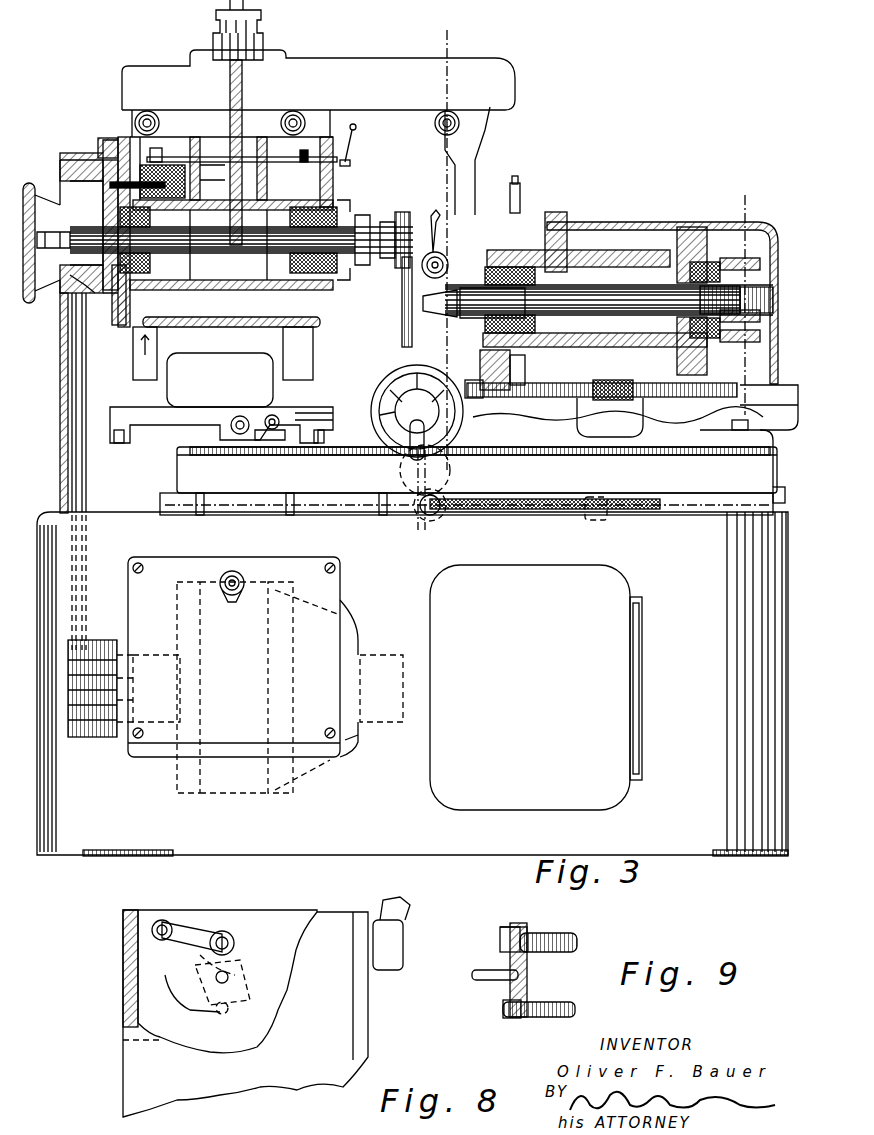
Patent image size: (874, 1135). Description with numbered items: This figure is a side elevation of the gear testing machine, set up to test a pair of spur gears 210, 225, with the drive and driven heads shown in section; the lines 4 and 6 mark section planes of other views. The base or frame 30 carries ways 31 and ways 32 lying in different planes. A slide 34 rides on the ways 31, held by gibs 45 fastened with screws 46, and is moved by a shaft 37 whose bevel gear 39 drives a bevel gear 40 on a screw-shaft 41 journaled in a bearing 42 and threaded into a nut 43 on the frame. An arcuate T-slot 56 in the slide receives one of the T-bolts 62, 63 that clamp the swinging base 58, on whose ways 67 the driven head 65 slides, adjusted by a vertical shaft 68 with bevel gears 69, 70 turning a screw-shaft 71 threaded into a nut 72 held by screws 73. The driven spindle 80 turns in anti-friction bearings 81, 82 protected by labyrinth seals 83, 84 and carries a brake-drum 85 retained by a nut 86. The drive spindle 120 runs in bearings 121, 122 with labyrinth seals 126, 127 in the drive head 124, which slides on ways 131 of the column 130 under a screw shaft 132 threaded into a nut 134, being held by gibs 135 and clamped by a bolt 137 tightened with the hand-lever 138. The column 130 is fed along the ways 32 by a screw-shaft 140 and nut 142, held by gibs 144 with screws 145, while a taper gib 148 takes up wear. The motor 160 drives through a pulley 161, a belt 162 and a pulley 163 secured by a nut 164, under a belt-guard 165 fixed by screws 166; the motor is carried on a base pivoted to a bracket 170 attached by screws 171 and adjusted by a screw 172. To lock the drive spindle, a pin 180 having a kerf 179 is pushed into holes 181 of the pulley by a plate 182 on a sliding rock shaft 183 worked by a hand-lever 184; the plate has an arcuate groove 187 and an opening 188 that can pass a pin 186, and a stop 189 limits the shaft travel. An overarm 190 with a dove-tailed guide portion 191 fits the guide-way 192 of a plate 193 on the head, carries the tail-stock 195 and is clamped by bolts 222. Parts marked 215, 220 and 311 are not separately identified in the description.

In FIG. 3, the section line 4 is at (748, 303).
In FIG. 3, the section line 6 is at (443, 242).
In FIG. 3, the base or frame 30 is at (712, 852).
In FIG. 3, the ways 31 is at (160, 496).
In FIG. 3, the ways 32 is at (305, 412).
In FIG. 3, the slide or plate 34 is at (180, 473).
In FIG. 3, the shaft 37 is at (440, 460).
In FIG. 3, the bevel gear 39 is at (440, 490).
In FIG. 3, the bevel gear 40 is at (425, 520).
In FIG. 3, the screw-shaft 41 is at (535, 515).
In FIG. 3, the bearing 42 is at (380, 515).
In FIG. 3, the nut 43 is at (592, 518).
In FIG. 3, the gibs 45 is at (285, 515).
In FIG. 3, the screws 46 is at (200, 515).
In FIG. 3, the arcuate T-slot 56 is at (388, 392).
In FIG. 3, the swinging base 58 is at (773, 445).
In FIG. 3, the T-bolt 62 is at (748, 424).
In FIG. 3, the T-bolt 63 is at (505, 418).
In FIG. 3, the driven head 65 is at (622, 222).
In FIG. 3, the straight ways 67 is at (782, 395).
In FIG. 3, the vertical shaft 68 is at (520, 190).
In FIG. 3, the bevel gear 69 is at (525, 370).
In FIG. 3, the bevel gear 70 is at (484, 400).
In FIG. 3, the screw-shaft 71 is at (575, 383).
In FIG. 3, the nut 72 is at (620, 380).
In FIG. 3, the screws 73 is at (600, 430).
In FIG. 3, the driven spindle 80 is at (610, 288).
In FIG. 3, the anti-friction bearing 81 is at (526, 270).
In FIG. 3, the anti-friction bearing 82 is at (690, 257).
In FIG. 3, the labyrinth seal 83 is at (445, 253).
In FIG. 3, the labyrinth seal 84 is at (722, 248).
In FIG. 3, the brake-drum 85 is at (770, 322).
In FIG. 3, the nut 86 is at (773, 283).
In FIG. 3, the drive spindle 120 is at (212, 262).
In FIG. 3, the anti-friction bearing 121 is at (240, 230).
In FIG. 3, the anti-friction bearing 122 is at (150, 265).
In FIG. 3, the drive head 124 is at (220, 327).
In FIG. 3, the labyrinth seal 126 is at (325, 205).
In FIG. 3, the labyrinth seal 127 is at (87, 278).
In FIG. 3, the vertical column or upright 130 is at (268, 350).
In FIG. 3, the ways 131 is at (158, 345).
In FIG. 3, the screw shaft 132 is at (244, 80).
In FIG. 3, the nut 134 is at (230, 175).
In FIG. 8, the gibs 135 is at (365, 1020).
In FIG. 8, the clamping bolt 137 is at (405, 948).
In FIG. 8, the hand-lever 138 is at (410, 910).
In FIG. 3, the screw-shaft 140 is at (238, 415).
In FIG. 3, the nut 142 is at (232, 420).
In FIG. 3, the gibs 144 is at (118, 440).
In FIG. 3, the screws 145 is at (267, 420).
In FIG. 3, the taper gib 148 is at (278, 415).
In FIG. 3, the motor 160 is at (348, 740).
In FIG. 3, the pulley 161 is at (100, 740).
In FIG. 3, the belt 162 is at (70, 462).
In FIG. 3, the pulley 163 is at (78, 155).
In FIG. 3, the nut 164 is at (70, 215).
In FIG. 3, the belt-guard 165 is at (60, 378).
In FIG. 3, the screws 166 is at (112, 140).
In FIG. 3, the bracket 170 is at (332, 600).
In FIG. 3, the screws 171 is at (334, 562).
In FIG. 3, the screw 172 is at (240, 575).
In FIG. 9, the kerf 179 is at (512, 1018).
In FIG. 3, the pin 180 is at (154, 183).
In FIG. 8, the pin 180 is at (220, 1015).
In FIG. 9, the pin 180 is at (550, 1018).
In FIG. 3, the spaced holes 181 is at (108, 320).
In FIG. 8, the plate 182 is at (192, 1000).
In FIG. 9, the plate 182 is at (527, 963).
In FIG. 3, the sliding rock shaft 183 is at (282, 165).
In FIG. 9, the sliding rock shaft 183 is at (555, 933).
In FIG. 3, the hand-lever 184 is at (350, 148).
In FIG. 8, the hand-lever 184 is at (188, 930).
In FIG. 3, the pin 186 is at (154, 152).
In FIG. 8, the pin 186 is at (228, 977).
In FIG. 9, the pin 186 is at (490, 982).
In FIG. 8, the shallow arcuate groove 187 is at (195, 965).
In FIG. 9, the shallow arcuate groove 187 is at (510, 965).
In FIG. 8, the opening 188 is at (235, 963).
In FIG. 3, the stop 189 is at (289, 149).
In FIG. 3, the overarm 190 is at (365, 58).
In FIG. 3, the dove-tailed guide portion 191 is at (512, 112).
In FIG. 3, the guide-way 192 is at (170, 178).
In FIG. 3, the plate 193 is at (345, 118).
In FIG. 3, the tail-stock or arm 195 is at (478, 165).
In FIG. 3, the spur gear 210 is at (402, 212).
In FIG. 3, the eccentric lever 215 is at (440, 222).
In FIG. 3, the screw 220 is at (460, 123).
In FIG. 3, the bolts 222 is at (159, 123).
In FIG. 3, the spur gear 225 is at (408, 347).
In FIG. 3, the nut 311 is at (263, 30).